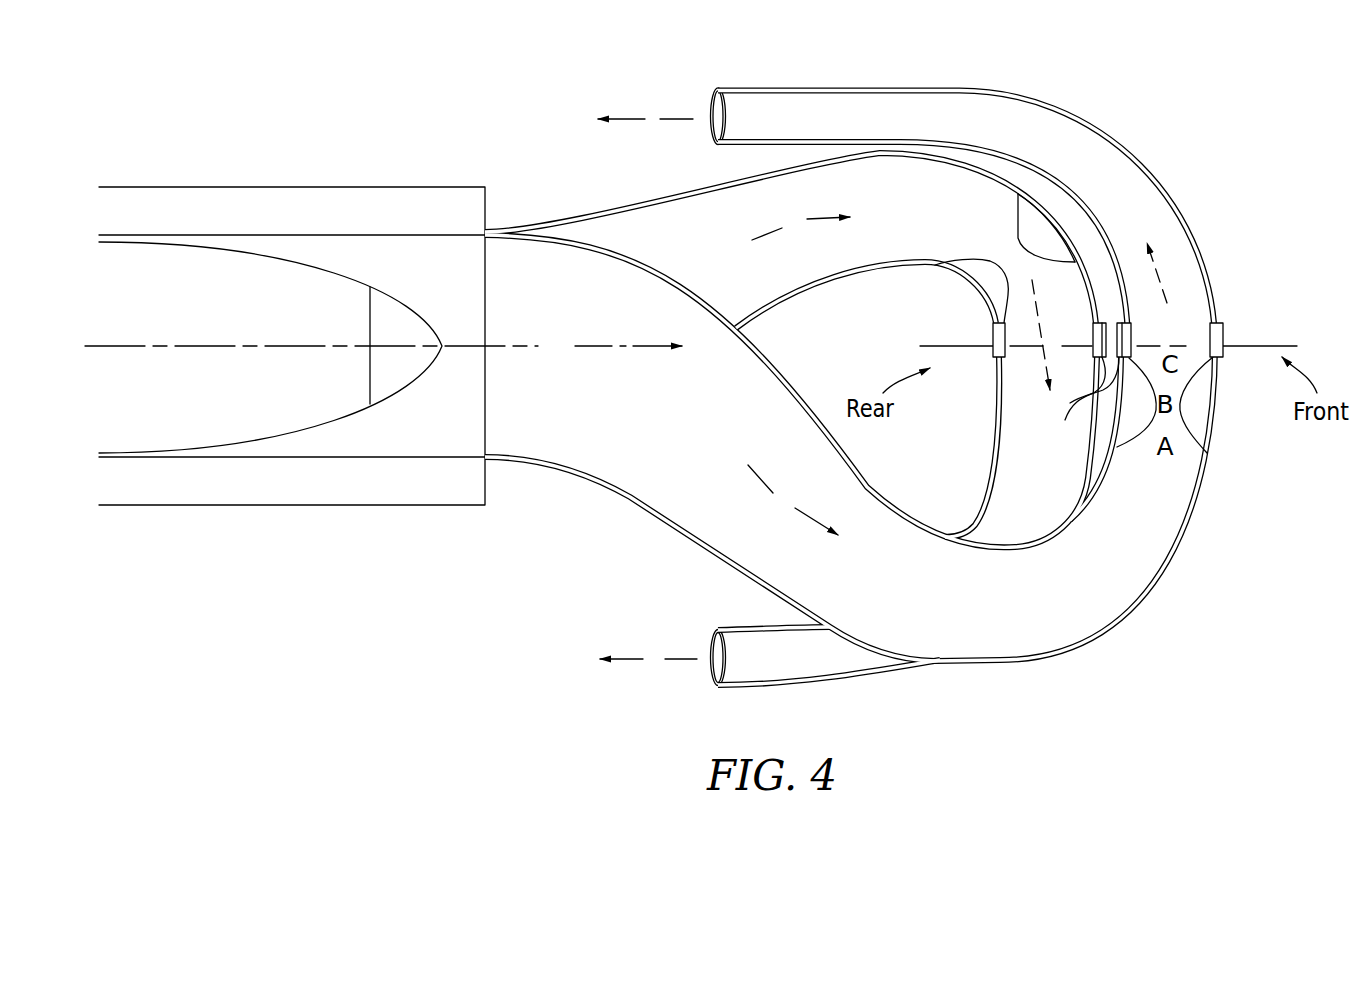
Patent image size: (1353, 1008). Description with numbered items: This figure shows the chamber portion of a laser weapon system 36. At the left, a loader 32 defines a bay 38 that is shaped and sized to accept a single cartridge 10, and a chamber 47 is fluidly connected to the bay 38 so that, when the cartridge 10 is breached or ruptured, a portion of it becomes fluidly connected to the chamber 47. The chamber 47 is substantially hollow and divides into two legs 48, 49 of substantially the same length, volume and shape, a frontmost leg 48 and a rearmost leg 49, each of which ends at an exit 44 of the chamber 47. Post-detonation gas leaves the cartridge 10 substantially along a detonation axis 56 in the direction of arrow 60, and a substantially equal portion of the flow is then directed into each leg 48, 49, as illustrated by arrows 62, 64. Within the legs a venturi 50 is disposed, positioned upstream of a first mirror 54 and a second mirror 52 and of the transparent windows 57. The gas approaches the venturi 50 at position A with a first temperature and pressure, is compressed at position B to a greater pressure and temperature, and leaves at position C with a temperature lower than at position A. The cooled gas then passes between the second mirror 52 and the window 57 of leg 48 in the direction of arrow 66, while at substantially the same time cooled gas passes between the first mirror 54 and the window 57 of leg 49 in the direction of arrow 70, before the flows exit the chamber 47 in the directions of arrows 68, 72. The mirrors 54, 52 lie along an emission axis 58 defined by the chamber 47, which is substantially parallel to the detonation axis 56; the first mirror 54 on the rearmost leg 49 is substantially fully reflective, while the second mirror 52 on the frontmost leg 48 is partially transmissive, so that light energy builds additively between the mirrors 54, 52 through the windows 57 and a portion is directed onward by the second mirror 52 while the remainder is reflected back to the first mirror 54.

The cartridge 10 is at (218, 318).
The loader 32 is at (443, 502).
The bay 38 is at (443, 443).
The laser weapon system 36 is at (500, 133).
The exit 44 is at (717, 108).
The chamber 47 is at (535, 493).
The leg 48 is at (638, 472).
The leg 49 is at (676, 265).
The venturi 50 is at (995, 275).
The second mirror 52 is at (1225, 357).
The first mirror 54 is at (993, 356).
The detonation axis 56 is at (507, 347).
The transparent window 57 is at (1085, 409).
The emission axis 58 is at (917, 343).
The arrow 60 is at (623, 345).
The arrow 62 is at (785, 502).
The arrow 64 is at (793, 222).
The arrow 66 is at (1163, 297).
The arrow 68 is at (652, 120).
The arrow 70 is at (1047, 333).
The arrow 72 is at (653, 660).